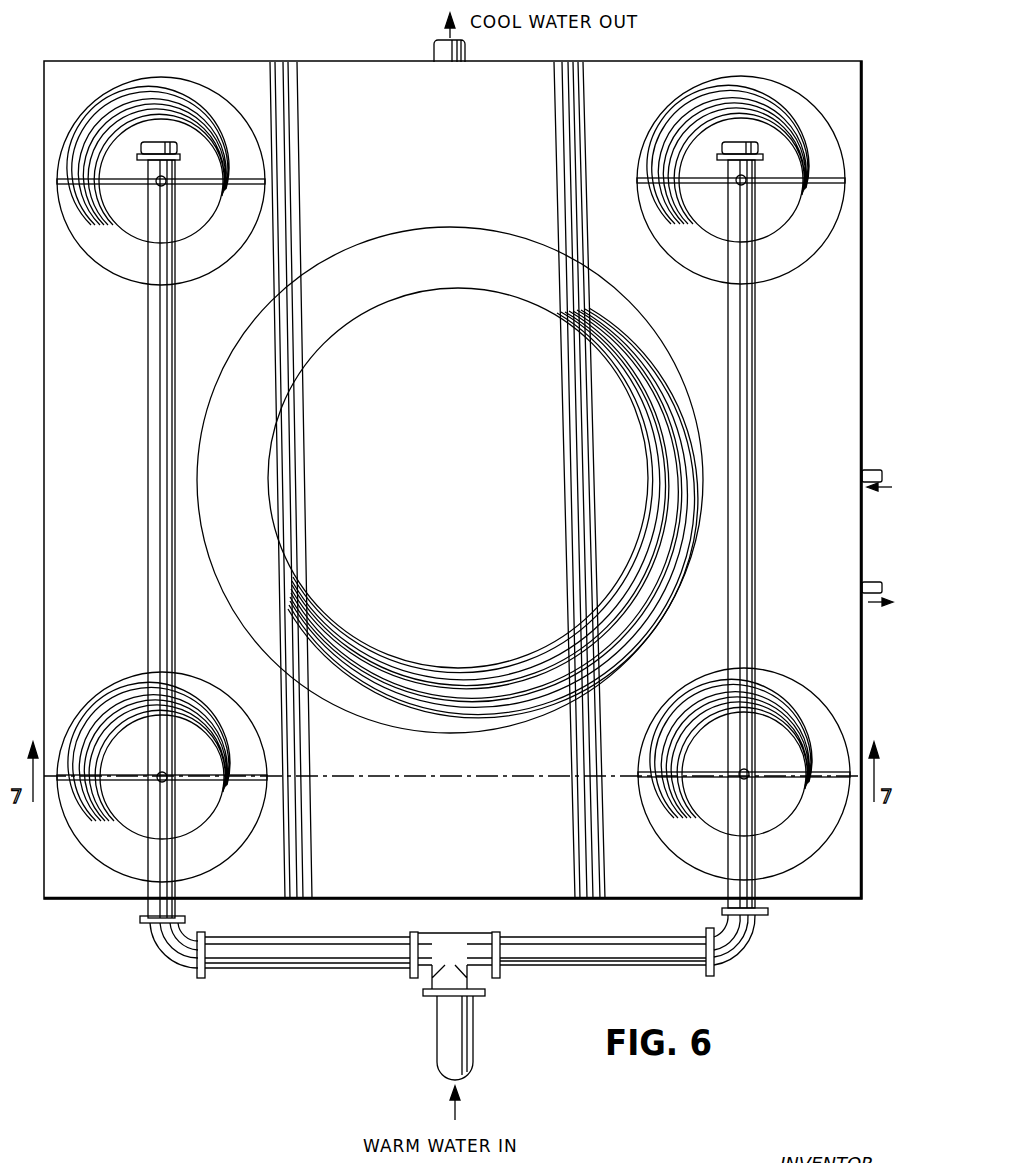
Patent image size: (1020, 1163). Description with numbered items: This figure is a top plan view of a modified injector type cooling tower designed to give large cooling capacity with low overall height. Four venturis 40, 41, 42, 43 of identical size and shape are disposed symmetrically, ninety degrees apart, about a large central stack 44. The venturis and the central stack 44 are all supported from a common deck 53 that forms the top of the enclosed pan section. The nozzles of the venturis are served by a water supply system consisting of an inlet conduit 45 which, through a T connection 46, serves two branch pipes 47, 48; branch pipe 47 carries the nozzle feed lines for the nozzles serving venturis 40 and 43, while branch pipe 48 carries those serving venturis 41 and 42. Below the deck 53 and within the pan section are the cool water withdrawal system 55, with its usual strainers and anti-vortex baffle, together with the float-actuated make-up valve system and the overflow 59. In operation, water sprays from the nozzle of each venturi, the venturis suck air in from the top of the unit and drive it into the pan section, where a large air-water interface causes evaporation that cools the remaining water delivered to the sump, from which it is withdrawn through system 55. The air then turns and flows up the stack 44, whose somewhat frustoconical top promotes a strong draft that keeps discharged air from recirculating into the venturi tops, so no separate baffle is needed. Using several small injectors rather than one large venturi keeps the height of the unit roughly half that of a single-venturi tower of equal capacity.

The venturi 40 is at (94, 690).
The venturi 41 is at (790, 678).
The venturi 42 is at (812, 98).
The venturi 43 is at (214, 98).
The central stack 44 is at (449, 265).
The inlet conduit 45 is at (443, 1050).
The T connection 46 is at (440, 983).
The branch pipe 47 is at (148, 398).
The branch pipe 48 is at (762, 458).
The deck 53 is at (468, 853).
The cool water withdrawal system 55 is at (436, 50).
The overflow 59 is at (874, 582).